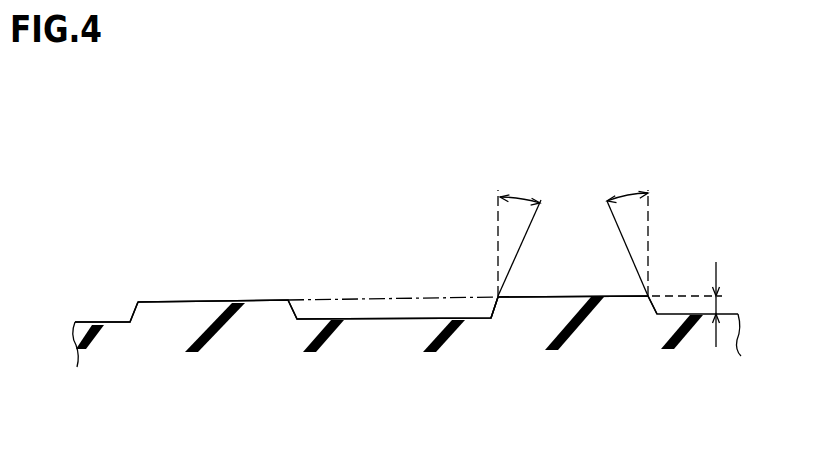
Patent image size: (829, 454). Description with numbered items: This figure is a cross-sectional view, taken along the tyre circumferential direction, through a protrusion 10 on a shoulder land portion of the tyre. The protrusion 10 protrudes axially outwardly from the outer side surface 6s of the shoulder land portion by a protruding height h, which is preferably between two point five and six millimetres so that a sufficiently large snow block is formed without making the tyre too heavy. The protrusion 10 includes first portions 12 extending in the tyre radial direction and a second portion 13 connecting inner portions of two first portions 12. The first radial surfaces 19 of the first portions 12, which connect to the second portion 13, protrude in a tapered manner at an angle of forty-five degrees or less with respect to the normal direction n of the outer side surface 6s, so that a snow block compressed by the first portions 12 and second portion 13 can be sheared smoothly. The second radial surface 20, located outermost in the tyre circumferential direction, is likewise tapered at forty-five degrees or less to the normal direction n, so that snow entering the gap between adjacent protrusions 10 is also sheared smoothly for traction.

The protrusion 10 is at (205, 188).
The first portion 12 is at (173, 308).
The second portion 13 is at (315, 300).
The outer side surface 6s is at (114, 320).
The first radial surface 19 is at (497, 303).
The second radial surface 20 is at (650, 298).
The normal direction n is at (497, 213).
The protruding height h is at (716, 303).